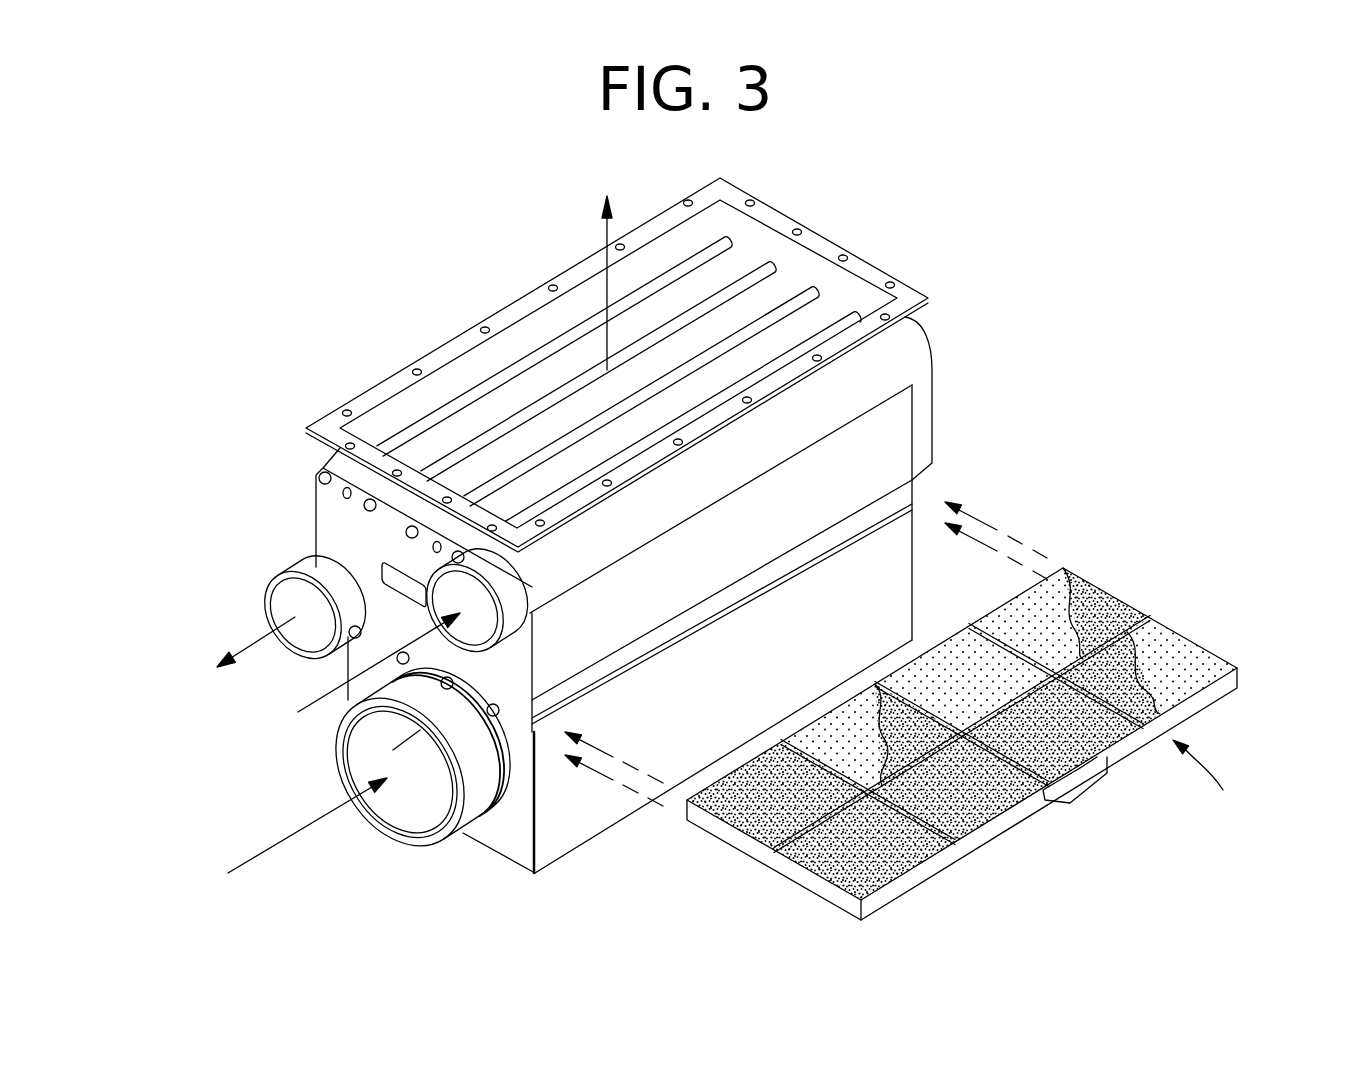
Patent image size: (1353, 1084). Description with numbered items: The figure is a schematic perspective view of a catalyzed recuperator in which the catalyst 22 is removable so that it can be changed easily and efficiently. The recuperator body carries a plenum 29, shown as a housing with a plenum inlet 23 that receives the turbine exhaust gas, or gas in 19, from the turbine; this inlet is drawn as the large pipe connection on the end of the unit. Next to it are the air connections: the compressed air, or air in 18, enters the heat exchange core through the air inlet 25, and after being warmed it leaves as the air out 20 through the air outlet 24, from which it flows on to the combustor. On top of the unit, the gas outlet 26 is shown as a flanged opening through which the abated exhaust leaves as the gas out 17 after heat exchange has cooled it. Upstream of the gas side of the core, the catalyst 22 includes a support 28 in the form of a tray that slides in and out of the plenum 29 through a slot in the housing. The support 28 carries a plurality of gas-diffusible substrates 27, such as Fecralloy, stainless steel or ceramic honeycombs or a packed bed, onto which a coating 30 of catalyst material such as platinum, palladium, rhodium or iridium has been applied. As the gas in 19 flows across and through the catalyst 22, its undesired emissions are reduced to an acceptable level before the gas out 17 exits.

The gas out 17 is at (605, 228).
The compressed air 18 is at (313, 698).
The gas in 19 is at (277, 840).
The air out 20 is at (250, 640).
The catalyst 22 is at (1215, 774).
The plenum inlet 23 is at (343, 747).
The air outlet 24 is at (277, 590).
The air inlet 25 is at (500, 583).
The gas outlet 26 is at (788, 287).
The gas-diffusible substrates 27 is at (817, 733).
The support 28 is at (998, 830).
The plenum 29 is at (603, 833).
The coating 30 is at (745, 770).